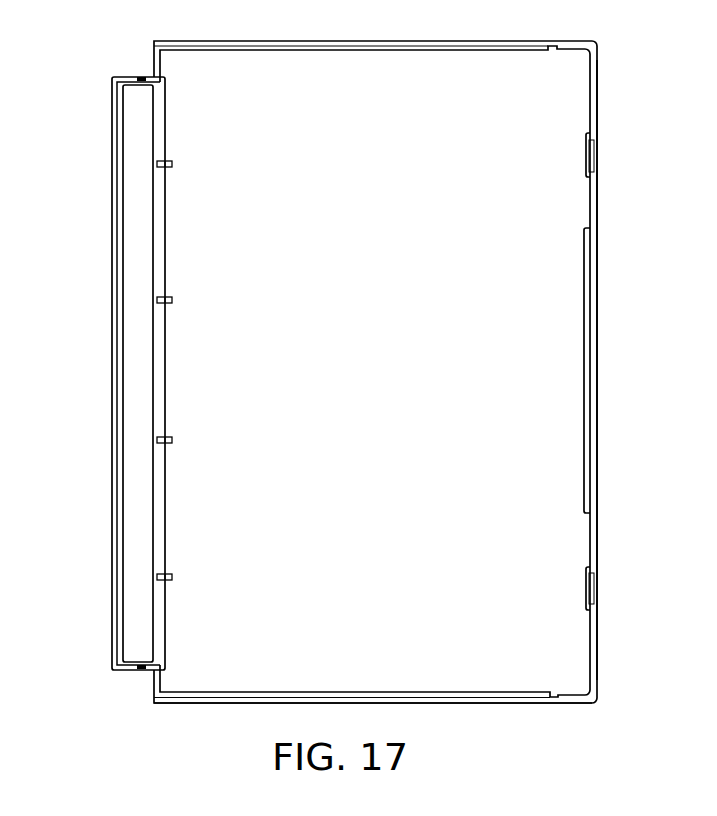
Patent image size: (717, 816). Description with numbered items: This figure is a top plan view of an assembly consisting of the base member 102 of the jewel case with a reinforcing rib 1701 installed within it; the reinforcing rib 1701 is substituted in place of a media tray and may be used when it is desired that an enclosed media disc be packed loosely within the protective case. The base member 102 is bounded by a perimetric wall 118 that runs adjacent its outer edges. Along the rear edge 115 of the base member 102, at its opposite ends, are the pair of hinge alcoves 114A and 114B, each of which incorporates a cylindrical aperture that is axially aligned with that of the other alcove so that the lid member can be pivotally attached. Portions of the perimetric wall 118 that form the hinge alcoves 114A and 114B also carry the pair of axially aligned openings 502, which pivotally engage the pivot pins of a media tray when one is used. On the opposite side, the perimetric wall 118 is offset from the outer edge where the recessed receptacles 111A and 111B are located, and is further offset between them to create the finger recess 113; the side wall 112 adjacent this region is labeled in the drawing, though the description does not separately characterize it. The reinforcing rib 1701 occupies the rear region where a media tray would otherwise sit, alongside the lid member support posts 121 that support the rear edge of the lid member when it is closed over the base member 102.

The base member 102 is at (243, 41).
The axially aligned openings 502 is at (372, 98).
The side wall 112 is at (605, 348).
The finger recess 113 is at (595, 382).
The recessed receptacle 111A is at (605, 152).
The recessed receptacle 111B is at (605, 580).
The hinge alcove 114A is at (143, 62).
The hinge alcove 114B is at (142, 683).
The rear edge 115 is at (102, 388).
The reinforcing rib 1701 is at (135, 228).
The lid member support posts 121 is at (157, 164).
The perimetric wall 118 is at (268, 698).